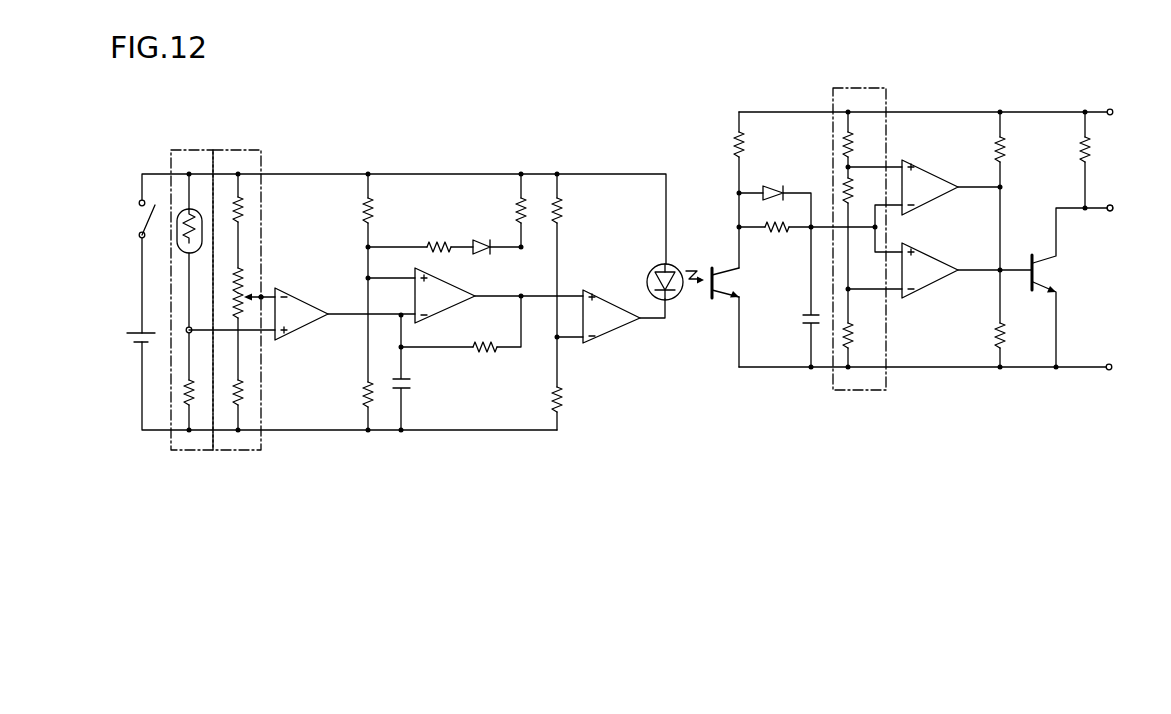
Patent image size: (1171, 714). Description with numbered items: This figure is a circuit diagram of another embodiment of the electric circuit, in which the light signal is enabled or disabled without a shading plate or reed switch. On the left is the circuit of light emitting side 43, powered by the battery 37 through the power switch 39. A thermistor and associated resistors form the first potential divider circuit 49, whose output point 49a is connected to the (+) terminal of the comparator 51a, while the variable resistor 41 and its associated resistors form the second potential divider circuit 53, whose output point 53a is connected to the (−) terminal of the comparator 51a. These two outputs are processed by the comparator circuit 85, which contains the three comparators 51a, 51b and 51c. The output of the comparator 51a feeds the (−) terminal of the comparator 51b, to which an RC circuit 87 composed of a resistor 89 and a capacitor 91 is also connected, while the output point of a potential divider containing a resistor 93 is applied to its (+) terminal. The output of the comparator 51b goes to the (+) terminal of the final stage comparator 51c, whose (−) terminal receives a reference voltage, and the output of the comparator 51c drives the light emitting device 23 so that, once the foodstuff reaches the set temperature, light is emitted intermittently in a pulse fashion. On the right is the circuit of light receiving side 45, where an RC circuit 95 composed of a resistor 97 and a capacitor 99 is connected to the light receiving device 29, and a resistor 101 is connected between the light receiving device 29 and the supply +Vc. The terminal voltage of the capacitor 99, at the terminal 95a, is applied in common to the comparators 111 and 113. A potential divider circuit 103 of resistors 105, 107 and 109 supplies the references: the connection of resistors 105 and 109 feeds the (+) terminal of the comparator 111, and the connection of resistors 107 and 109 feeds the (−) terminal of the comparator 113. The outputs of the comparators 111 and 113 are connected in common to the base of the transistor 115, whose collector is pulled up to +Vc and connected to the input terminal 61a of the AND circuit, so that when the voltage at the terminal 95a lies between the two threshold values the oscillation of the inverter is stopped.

The light emitting device 23 is at (653, 270).
The light receiving device 29 is at (710, 300).
The battery 37 is at (140, 343).
The power switch 39 is at (144, 215).
The variable resistor 41 is at (245, 272).
The circuit of light emitting side 43 is at (445, 164).
The circuit of light receiving side 45 is at (953, 421).
The first potential divider circuit 49 is at (190, 152).
The output point of first potential divider circuit 49a is at (186, 333).
The comparator 51a is at (318, 338).
The comparator 51b is at (452, 300).
The comparator 51c is at (614, 324).
The second potential divider circuit 53 is at (243, 152).
The output point of second potential divider circuit 53a is at (263, 298).
The input terminal 61a is at (1113, 212).
The comparator circuit 85 is at (347, 241).
The RC circuit 87 is at (455, 387).
The resistor 89 is at (486, 354).
The capacitor 91 is at (406, 389).
The resistor 93 is at (376, 212).
The RC circuit 95 is at (790, 297).
The terminal 95a is at (878, 228).
The resistor 97 is at (771, 233).
The capacitor 99 is at (803, 316).
The resistor 101 is at (739, 150).
The potential divider circuit 103 is at (876, 92).
The resistor 105 is at (857, 150).
The resistor 107 is at (853, 207).
The resistor 109 is at (857, 336).
The comparator 111 is at (933, 176).
The comparator 113 is at (940, 266).
The transistor 115 is at (1030, 291).